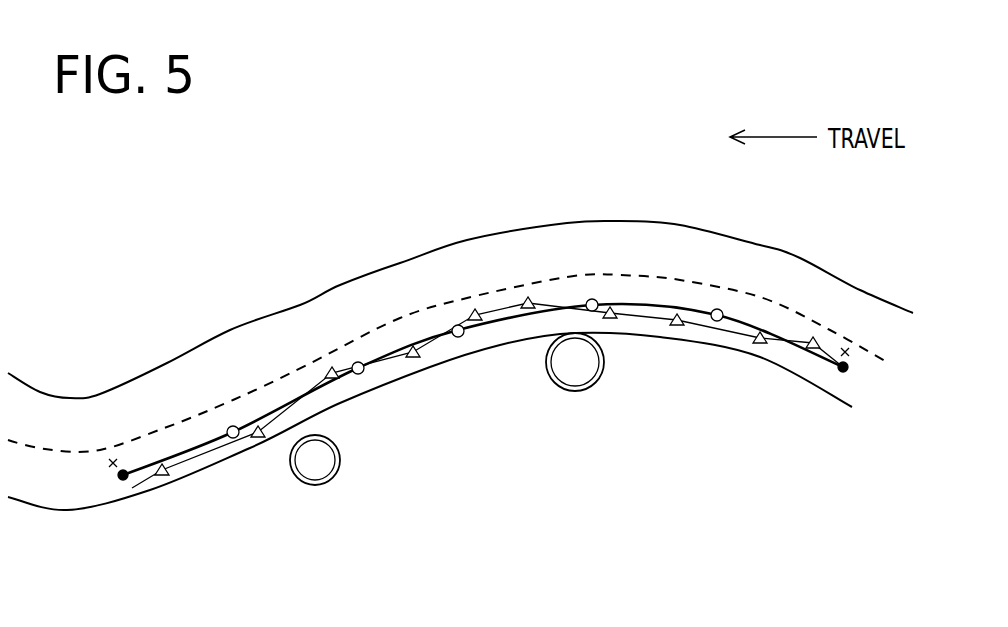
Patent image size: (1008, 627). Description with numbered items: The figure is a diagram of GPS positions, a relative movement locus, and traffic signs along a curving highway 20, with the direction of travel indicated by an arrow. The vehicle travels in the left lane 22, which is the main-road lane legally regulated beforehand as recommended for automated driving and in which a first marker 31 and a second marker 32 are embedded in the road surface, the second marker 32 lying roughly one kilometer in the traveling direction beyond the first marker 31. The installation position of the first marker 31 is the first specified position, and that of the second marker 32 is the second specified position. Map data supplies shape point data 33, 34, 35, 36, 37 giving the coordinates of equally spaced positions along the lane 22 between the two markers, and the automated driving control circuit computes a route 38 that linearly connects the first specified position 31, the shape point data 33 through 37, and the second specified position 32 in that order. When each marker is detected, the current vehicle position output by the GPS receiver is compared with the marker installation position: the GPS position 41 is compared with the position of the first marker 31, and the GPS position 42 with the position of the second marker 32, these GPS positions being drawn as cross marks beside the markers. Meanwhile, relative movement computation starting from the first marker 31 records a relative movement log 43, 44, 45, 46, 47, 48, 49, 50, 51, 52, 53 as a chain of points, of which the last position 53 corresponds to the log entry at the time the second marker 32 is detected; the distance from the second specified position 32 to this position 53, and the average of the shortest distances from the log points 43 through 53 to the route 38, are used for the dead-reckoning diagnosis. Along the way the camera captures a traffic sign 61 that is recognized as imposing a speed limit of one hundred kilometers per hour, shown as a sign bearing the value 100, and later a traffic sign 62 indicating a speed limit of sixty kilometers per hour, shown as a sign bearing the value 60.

The highway 20 is at (48, 396).
The left lane 22 is at (45, 492).
The first marker 31 is at (843, 373).
The second marker 32 is at (121, 480).
The shape point data 33 is at (717, 322).
The shape point data 34 is at (596, 312).
The shape point data 35 is at (458, 338).
The shape point data 36 is at (358, 375).
The shape point data 37 is at (234, 439).
The route 38 is at (513, 318).
The GPS position 41 is at (848, 349).
The GPS position 42 is at (113, 459).
The relative movement log 43 is at (813, 337).
The relative movement log 44 is at (760, 332).
The relative movement log 45 is at (677, 314).
The relative movement log 46 is at (610, 307).
The relative movement log 47 is at (528, 297).
The relative movement log 48 is at (475, 309).
The relative movement log 49 is at (412, 346).
The relative movement log 50 is at (332, 367).
The relative movement log 51 is at (258, 426).
The relative movement log 52 is at (163, 463).
The last position in the relative movement log 53 is at (136, 493).
The speed limit value 60 is at (318, 486).
The traffic sign 61 is at (575, 406).
The traffic sign 62 is at (320, 501).
The speed limit value 100 is at (577, 392).